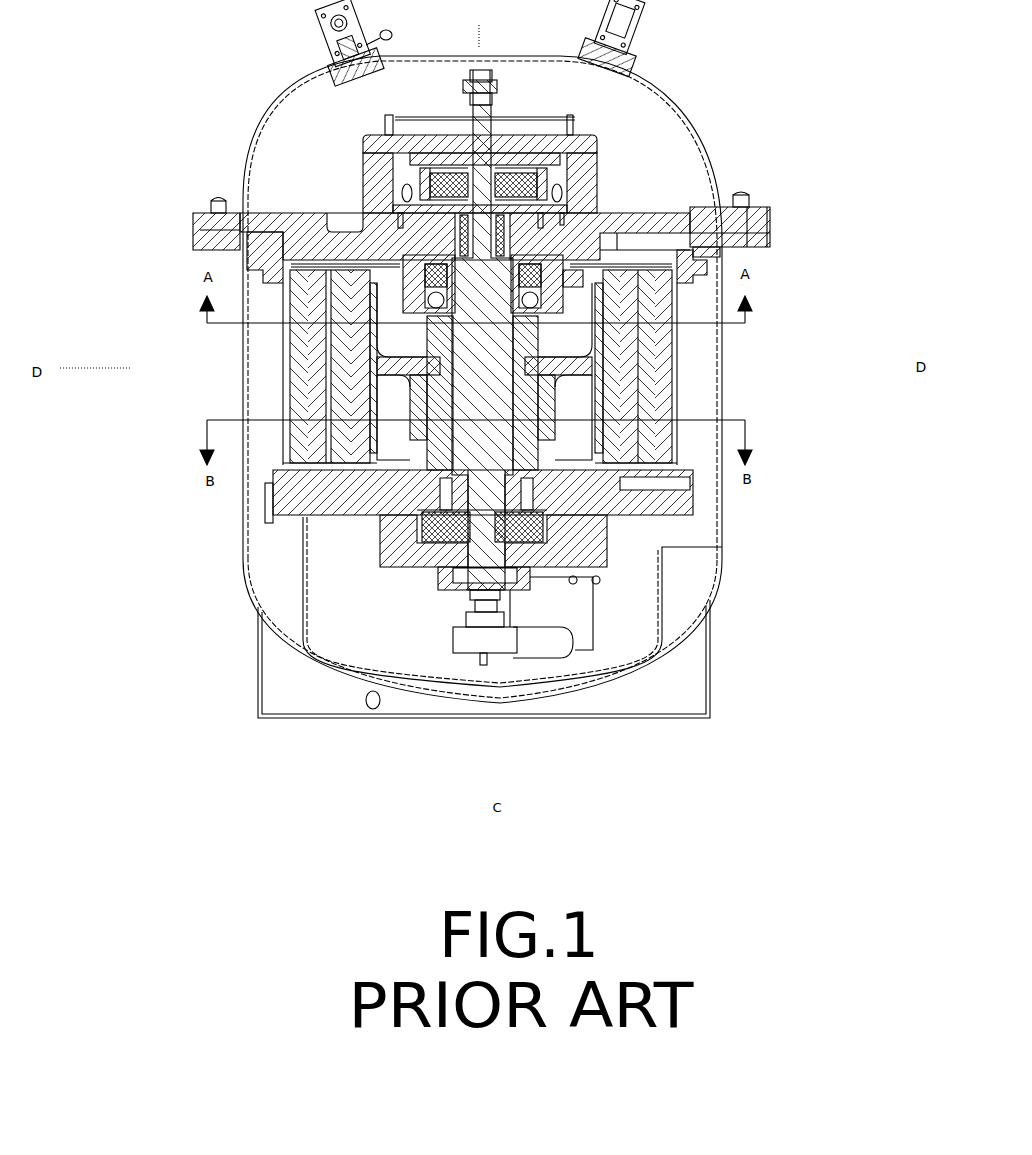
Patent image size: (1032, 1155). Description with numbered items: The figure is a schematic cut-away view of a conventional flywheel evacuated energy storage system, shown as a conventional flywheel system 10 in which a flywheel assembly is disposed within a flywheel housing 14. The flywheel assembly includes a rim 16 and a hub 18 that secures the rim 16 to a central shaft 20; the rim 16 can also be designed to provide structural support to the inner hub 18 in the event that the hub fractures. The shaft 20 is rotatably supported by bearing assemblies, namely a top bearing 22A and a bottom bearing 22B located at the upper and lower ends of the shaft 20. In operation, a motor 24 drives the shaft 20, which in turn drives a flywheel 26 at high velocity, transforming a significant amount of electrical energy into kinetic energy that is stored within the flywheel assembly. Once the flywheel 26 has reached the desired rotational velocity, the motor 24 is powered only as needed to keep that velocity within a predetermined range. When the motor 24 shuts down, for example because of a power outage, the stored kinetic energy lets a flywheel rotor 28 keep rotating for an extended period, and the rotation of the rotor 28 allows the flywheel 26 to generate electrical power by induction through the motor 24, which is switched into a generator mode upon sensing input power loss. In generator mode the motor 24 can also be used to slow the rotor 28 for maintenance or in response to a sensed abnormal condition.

The conventional flywheel system 10 is at (147, 658).
The flywheel housing 14 is at (698, 130).
The rim 16 is at (332, 387).
The hub 18 is at (380, 372).
The shaft 20 is at (493, 403).
The top bearing 22A is at (468, 163).
The bottom bearing 22B is at (458, 545).
The motor 24 is at (457, 230).
The flywheel 26 is at (344, 341).
The flywheel rotor 28 is at (588, 355).